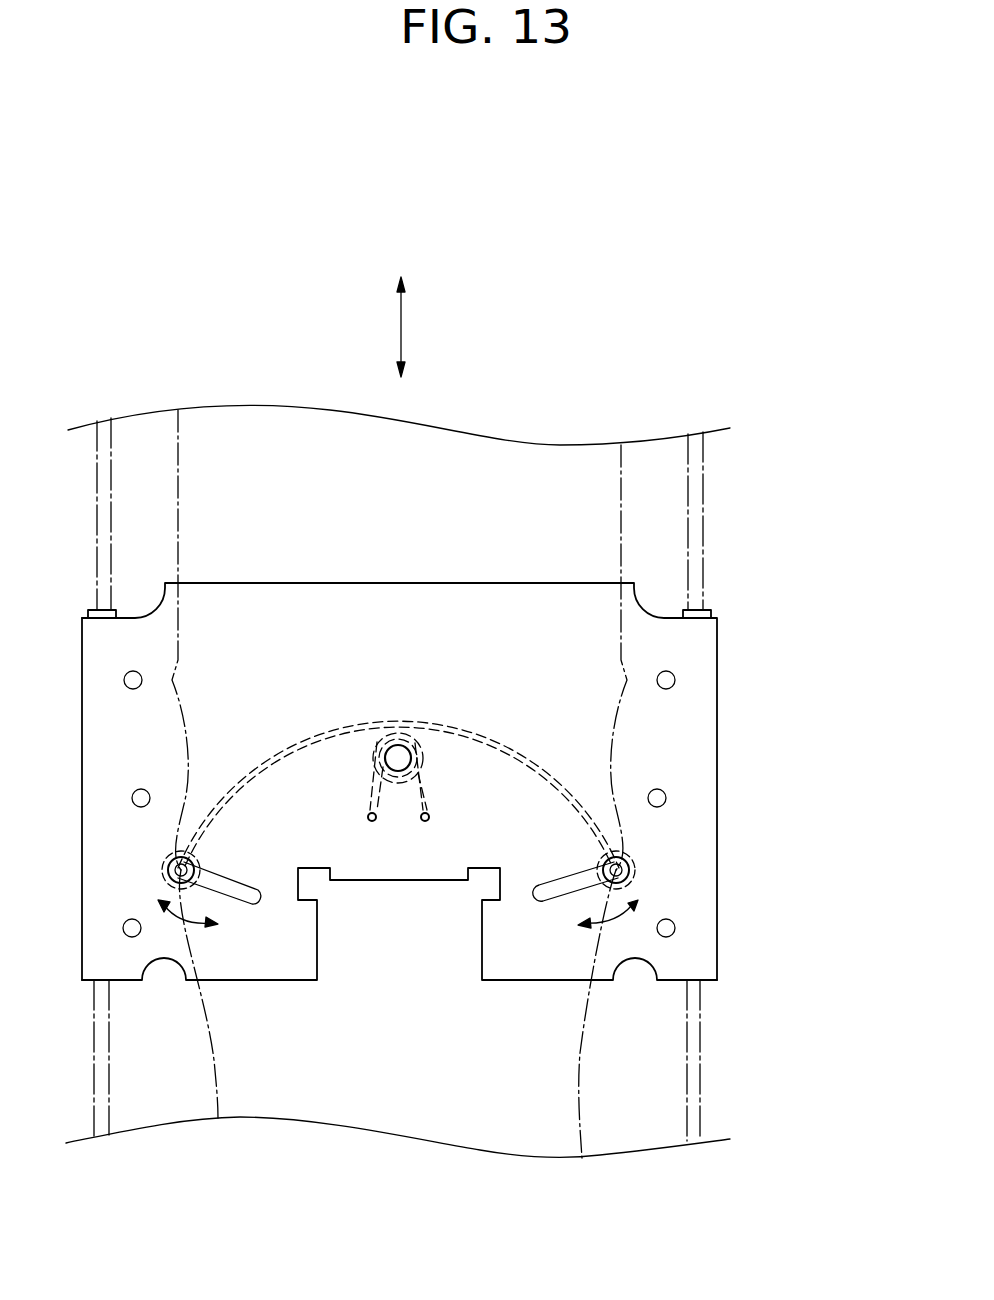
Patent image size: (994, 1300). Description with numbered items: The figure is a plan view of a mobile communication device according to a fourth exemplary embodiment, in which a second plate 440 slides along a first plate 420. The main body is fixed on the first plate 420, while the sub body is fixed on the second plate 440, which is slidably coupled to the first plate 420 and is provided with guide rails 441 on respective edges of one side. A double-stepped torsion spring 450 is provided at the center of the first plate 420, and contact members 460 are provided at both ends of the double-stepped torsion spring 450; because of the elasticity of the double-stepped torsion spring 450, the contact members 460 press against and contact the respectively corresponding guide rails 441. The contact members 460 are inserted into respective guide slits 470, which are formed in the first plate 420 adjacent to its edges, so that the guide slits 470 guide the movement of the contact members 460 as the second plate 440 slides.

The first plate 420 is at (690, 745).
The second plate 440 is at (658, 502).
The guide rails 441 is at (620, 480).
The double-stepped torsion spring 450 is at (503, 743).
The contact members 460 is at (563, 892).
The guide slits 470 is at (548, 905).